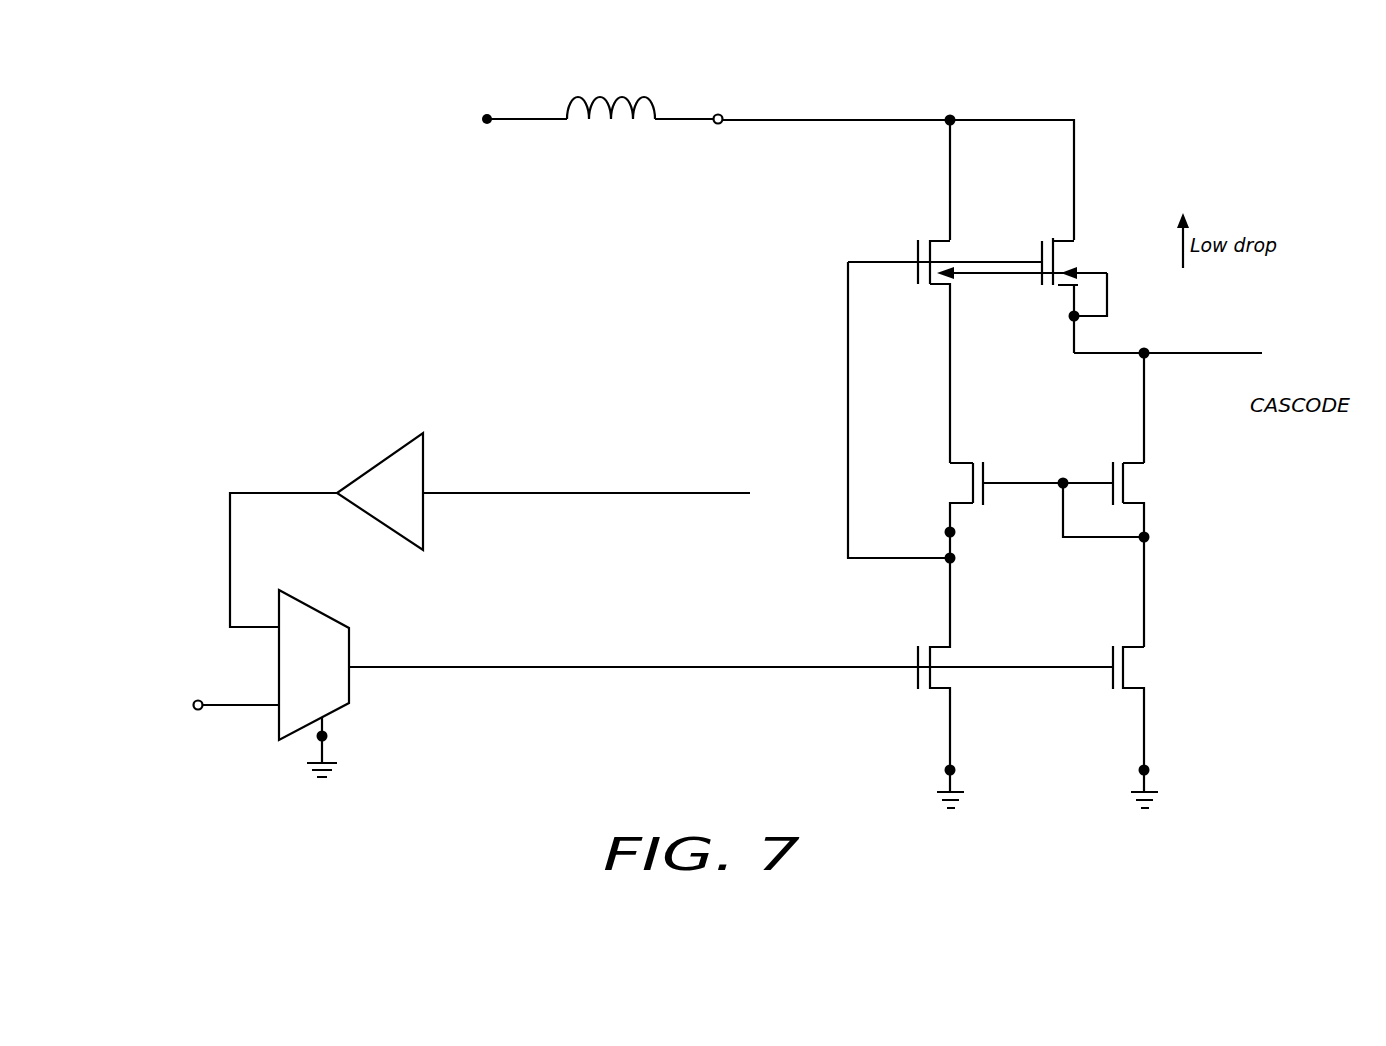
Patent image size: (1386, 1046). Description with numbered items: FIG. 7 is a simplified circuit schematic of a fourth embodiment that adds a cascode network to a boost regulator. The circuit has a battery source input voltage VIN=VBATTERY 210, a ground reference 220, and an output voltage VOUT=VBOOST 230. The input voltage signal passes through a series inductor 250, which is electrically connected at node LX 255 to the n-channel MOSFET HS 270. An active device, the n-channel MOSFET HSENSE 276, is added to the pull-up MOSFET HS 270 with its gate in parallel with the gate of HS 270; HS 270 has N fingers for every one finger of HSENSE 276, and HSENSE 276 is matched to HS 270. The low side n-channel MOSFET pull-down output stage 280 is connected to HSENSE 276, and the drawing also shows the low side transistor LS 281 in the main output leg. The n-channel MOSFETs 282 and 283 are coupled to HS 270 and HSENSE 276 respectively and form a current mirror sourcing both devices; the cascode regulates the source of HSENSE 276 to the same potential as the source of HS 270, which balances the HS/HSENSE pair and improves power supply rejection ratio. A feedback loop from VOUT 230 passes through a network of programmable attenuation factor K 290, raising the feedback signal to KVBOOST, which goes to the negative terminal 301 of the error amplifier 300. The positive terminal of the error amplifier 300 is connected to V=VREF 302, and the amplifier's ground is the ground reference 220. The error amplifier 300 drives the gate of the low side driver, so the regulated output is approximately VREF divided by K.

The battery source input voltage VIN=VBATTERY 210 is at (498, 72).
The series inductor 250 is at (598, 126).
The node LX 255 is at (950, 88).
The n-channel MOSFET HSENSE 276 is at (955, 250).
The n-channel MOSFET HS 270 is at (1117, 252).
The output voltage VOUT=VBOOST 230 is at (1243, 320).
The n-channel MOSFET 282 is at (937, 484).
The n-channel MOSFET 283 is at (1160, 487).
The low side n-channel MOSFET pull-down output stage 280 is at (965, 655).
The low-side transistor LS 281 is at (1158, 667).
The ground reference 220 is at (928, 789).
The network of programmable attenuation factor K 290 is at (423, 457).
The error amplifier 300 is at (313, 603).
The negative terminal 301 is at (210, 640).
The V=VREF 302 is at (155, 722).